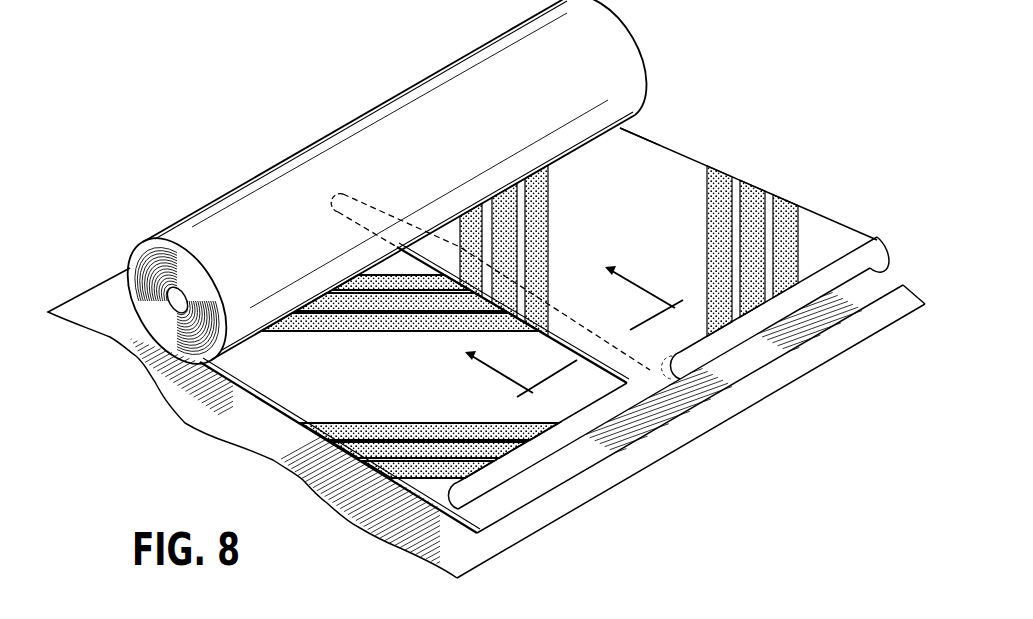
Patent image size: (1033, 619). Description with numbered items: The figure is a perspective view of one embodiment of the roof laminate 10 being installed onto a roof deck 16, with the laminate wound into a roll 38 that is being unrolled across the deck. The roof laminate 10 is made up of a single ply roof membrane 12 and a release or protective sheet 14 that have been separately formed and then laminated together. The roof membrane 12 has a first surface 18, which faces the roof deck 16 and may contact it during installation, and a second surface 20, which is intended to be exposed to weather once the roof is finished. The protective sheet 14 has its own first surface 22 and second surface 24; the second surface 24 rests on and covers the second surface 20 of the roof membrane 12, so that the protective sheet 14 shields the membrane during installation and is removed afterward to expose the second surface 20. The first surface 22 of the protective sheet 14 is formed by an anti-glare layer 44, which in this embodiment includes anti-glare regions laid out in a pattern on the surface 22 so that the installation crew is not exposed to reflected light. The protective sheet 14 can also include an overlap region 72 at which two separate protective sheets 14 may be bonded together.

The roof laminate 10 is at (818, 106).
The roof membrane 12 is at (719, 398).
The protective sheet 14 is at (396, 389).
The roof deck 16 is at (383, 546).
The first surface 18 is at (527, 506).
The second surface 20 is at (735, 366).
The first surface 22 is at (680, 175).
The second surface 24 is at (820, 288).
The roll 38 is at (650, 62).
The anti-glare layer 44 is at (655, 138).
The overlap region 72 is at (339, 204).